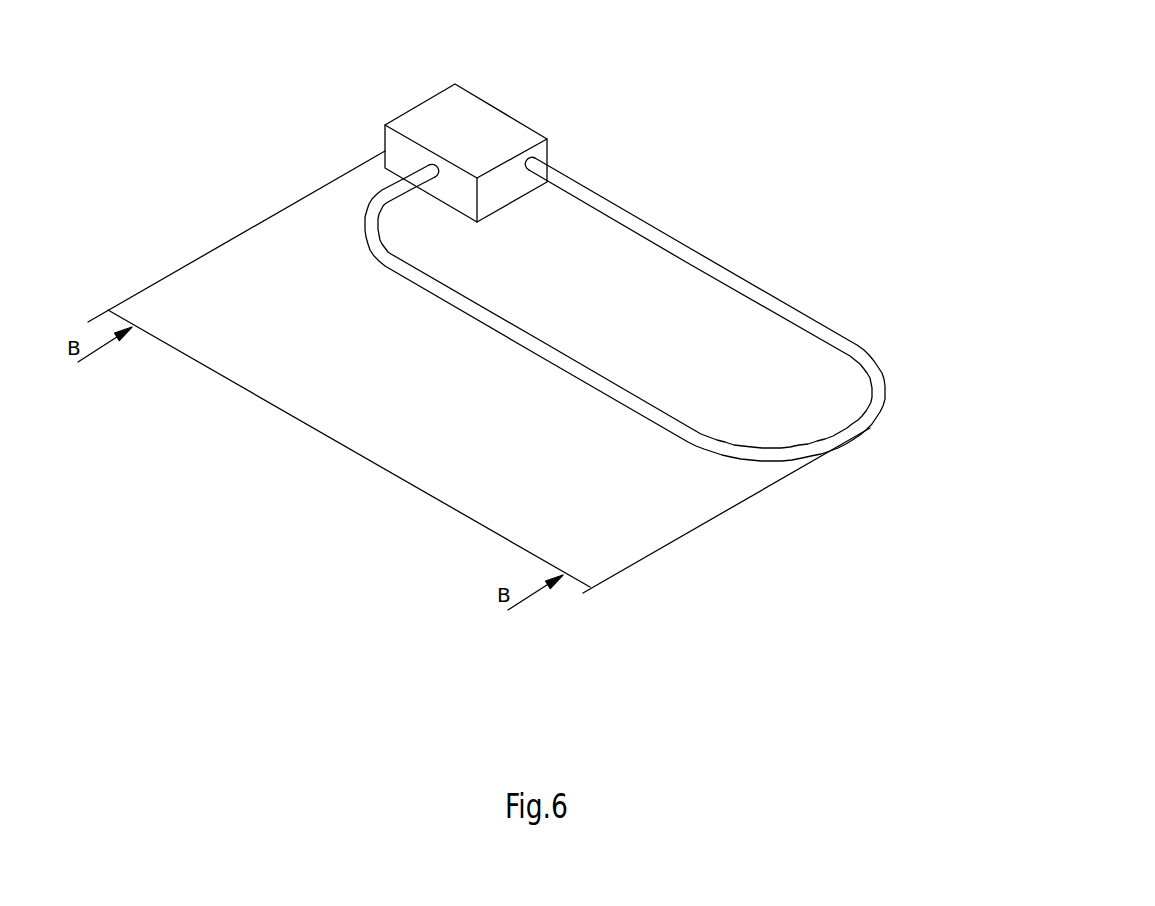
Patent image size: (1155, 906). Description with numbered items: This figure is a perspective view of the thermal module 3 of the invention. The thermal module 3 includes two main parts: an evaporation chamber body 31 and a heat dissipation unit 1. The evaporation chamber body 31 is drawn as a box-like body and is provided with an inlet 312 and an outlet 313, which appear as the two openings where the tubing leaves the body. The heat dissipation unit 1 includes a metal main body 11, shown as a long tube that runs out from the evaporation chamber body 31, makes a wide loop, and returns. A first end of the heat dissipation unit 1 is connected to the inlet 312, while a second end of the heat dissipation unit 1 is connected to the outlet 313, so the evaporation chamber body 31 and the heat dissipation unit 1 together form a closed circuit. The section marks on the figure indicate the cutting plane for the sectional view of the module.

The heat dissipation unit 1 is at (810, 297).
The metal main body 11 is at (878, 382).
The thermal module 3 is at (1025, 131).
The evaporation chamber body 31 is at (468, 137).
The inlet 312 is at (437, 170).
The outlet 313 is at (528, 162).